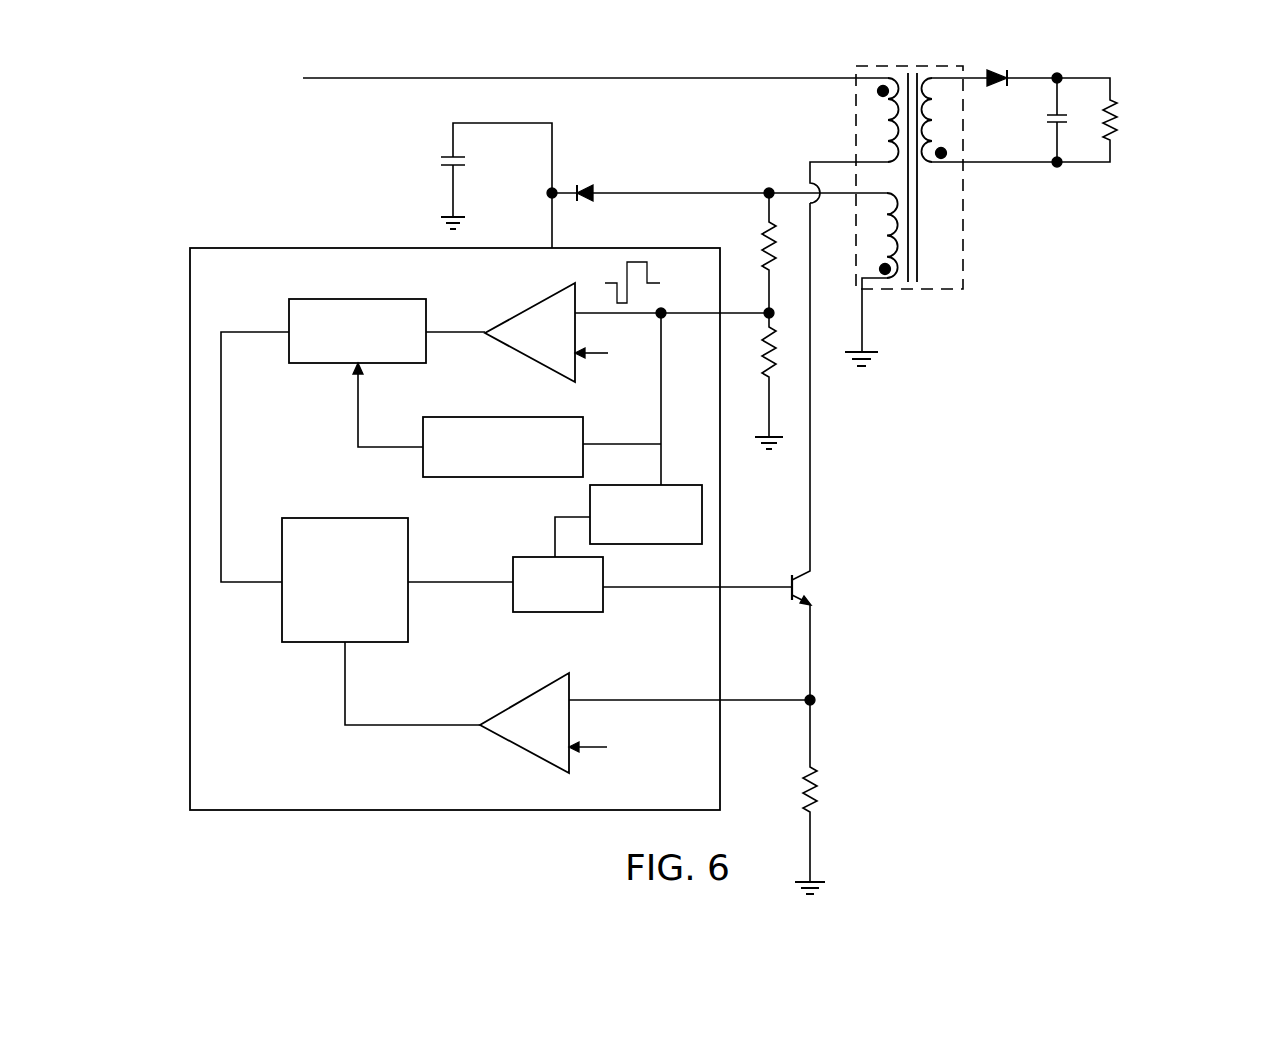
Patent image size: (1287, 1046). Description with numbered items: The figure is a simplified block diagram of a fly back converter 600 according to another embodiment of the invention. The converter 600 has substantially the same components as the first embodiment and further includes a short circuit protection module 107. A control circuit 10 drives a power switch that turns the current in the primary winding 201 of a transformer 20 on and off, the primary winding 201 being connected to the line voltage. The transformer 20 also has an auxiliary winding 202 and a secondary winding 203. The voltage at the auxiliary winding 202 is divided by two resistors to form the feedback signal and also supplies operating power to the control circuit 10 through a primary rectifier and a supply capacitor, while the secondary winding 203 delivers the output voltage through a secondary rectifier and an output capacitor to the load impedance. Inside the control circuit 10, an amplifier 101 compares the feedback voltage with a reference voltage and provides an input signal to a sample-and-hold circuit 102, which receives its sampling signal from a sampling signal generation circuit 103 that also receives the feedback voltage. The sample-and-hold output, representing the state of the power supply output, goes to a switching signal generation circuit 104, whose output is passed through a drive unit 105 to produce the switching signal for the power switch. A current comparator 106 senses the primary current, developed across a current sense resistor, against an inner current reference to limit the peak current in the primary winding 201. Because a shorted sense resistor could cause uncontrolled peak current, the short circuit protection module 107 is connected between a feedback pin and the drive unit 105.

The fly back converter 600 is at (1185, 129).
The control circuit 10 is at (325, 248).
The transformer 20 is at (963, 289).
The primary winding 201 is at (878, 100).
The auxiliary winding 202 is at (882, 250).
The secondary winding 203 is at (944, 128).
The amplifier 101 is at (526, 357).
The sample-and-hold circuit 102 is at (292, 364).
The sampling signal generation circuit 103 is at (423, 461).
The switching signal generation circuit 104 is at (282, 632).
The drive unit 105 is at (532, 557).
The current comparator 106 is at (520, 692).
The short circuit protection module 107 is at (688, 474).